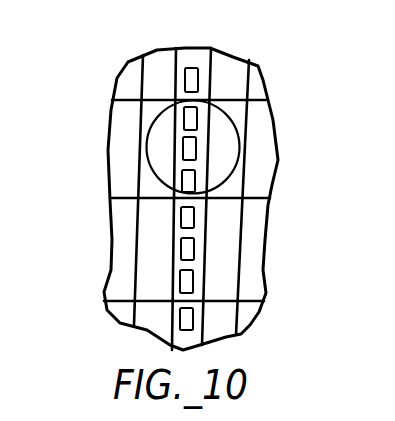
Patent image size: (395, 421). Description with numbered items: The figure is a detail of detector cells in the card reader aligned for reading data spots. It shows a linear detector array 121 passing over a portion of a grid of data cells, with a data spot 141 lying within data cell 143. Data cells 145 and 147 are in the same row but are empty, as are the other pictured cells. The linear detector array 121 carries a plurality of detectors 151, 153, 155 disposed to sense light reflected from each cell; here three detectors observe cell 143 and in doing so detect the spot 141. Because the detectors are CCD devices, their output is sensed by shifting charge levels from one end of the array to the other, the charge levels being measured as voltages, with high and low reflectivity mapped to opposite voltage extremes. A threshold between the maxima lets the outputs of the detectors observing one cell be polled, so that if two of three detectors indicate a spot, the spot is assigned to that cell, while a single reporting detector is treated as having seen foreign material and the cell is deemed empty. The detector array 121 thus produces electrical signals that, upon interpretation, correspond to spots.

The linear detector array 121 is at (187, 50).
The data spot 141 is at (227, 130).
The data cell 143 is at (233, 188).
The data cell 145 is at (223, 267).
The data cell 147 is at (151, 317).
The detector 151 is at (190, 123).
The detector 153 is at (187, 152).
The detector 155 is at (186, 183).